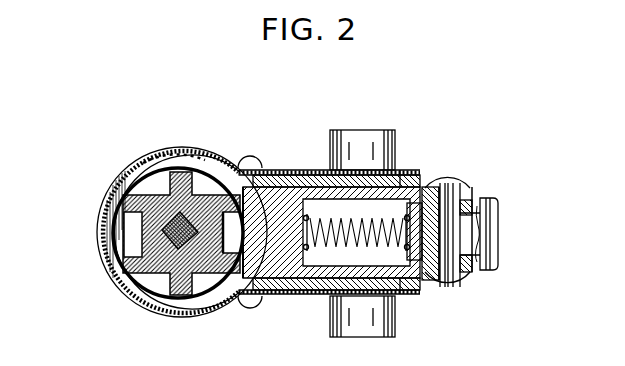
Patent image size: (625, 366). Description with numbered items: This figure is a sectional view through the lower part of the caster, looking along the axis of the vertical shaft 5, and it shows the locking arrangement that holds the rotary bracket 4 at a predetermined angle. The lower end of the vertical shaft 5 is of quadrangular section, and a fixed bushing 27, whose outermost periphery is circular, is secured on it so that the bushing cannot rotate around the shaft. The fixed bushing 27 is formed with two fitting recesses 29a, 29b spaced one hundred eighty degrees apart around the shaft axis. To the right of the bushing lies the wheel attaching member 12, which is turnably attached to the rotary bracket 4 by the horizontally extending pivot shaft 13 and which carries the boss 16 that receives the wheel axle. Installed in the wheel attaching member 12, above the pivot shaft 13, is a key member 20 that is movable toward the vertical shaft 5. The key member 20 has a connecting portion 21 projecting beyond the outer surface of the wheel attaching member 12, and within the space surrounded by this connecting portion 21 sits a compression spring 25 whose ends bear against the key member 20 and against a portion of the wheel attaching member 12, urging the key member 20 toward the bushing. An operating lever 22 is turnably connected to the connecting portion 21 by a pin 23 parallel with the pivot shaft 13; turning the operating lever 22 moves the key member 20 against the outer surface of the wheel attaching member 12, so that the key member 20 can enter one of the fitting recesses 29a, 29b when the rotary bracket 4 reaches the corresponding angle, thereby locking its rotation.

The rotary bracket 4 is at (292, 167).
The vertical shaft 5 is at (125, 183).
The wheel attaching member 12 is at (432, 175).
The pivot shaft 13 is at (253, 308).
The boss 16 is at (340, 325).
The key member 20 is at (271, 168).
The connecting portion 21 is at (408, 172).
The operating lever 22 is at (505, 210).
The pin 23 is at (452, 292).
The spring 25 is at (344, 216).
The fixed bushing 27 is at (128, 287).
The fitting recess 29a is at (214, 192).
The fitting recess 29b is at (142, 236).